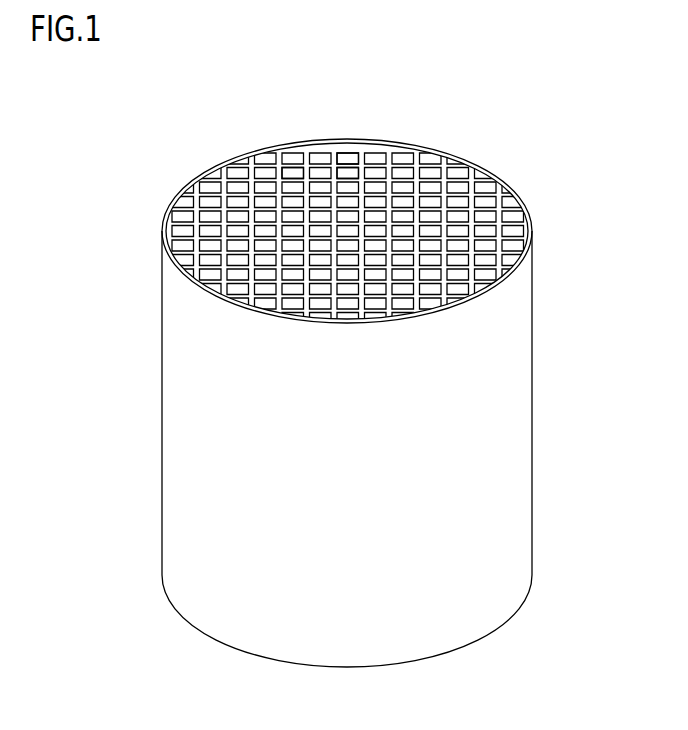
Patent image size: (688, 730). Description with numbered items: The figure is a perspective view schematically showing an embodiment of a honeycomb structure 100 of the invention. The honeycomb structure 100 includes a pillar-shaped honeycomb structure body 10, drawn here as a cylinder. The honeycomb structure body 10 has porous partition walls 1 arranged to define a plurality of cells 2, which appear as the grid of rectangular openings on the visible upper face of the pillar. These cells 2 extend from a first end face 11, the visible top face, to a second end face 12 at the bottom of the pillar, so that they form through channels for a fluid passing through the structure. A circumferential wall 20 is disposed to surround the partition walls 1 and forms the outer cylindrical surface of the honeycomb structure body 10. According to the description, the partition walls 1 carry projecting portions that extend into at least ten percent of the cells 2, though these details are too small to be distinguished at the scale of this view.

The honeycomb structure 100 is at (597, 104).
The honeycomb structure body 10 is at (327, 207).
The first end face 11 is at (216, 166).
The second end face 12 is at (410, 664).
The circumferential wall 20 is at (499, 361).
The partition wall 1 is at (303, 168).
The cell 2 is at (348, 155).